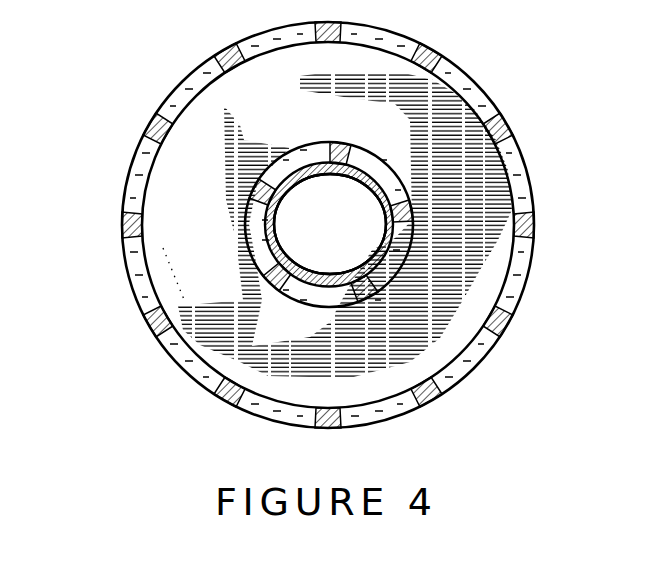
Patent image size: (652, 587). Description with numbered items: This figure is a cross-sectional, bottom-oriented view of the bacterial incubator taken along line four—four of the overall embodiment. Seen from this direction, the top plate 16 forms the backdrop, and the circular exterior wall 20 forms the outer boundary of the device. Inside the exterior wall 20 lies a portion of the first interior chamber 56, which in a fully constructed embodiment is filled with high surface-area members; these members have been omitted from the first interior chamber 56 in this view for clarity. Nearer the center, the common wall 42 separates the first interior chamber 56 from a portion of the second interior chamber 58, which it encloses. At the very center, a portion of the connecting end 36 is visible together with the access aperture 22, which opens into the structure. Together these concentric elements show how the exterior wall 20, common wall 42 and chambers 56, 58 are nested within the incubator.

The top plate 16 is at (363, 103).
The exterior wall 20 is at (224, 52).
The access aperture 22 is at (310, 217).
The connecting end 36 is at (247, 228).
The common wall 42 is at (412, 227).
The first interior chamber 56 is at (230, 281).
The second interior chamber 58 is at (310, 258).